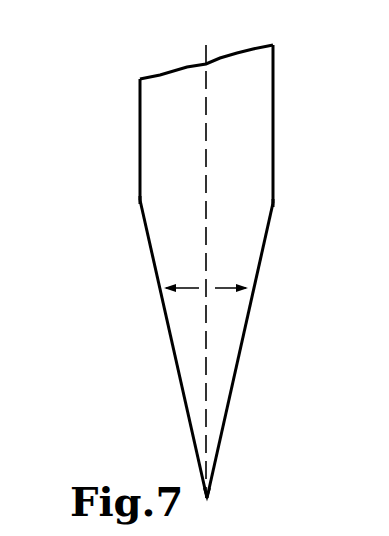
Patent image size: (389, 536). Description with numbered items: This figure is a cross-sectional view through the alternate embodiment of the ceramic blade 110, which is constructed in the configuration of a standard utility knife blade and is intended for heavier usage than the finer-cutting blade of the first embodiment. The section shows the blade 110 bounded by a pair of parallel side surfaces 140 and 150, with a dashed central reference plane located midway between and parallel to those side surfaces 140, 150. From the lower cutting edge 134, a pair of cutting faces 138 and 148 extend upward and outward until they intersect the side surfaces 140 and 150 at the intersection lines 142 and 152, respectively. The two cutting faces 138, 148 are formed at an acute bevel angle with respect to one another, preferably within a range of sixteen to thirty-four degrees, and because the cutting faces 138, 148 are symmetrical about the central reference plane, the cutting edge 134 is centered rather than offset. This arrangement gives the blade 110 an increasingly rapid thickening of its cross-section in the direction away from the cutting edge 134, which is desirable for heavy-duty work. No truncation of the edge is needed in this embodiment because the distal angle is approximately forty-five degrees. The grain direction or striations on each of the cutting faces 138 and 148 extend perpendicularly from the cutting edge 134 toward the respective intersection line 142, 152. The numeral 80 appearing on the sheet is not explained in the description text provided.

The sensor assembly 80 is at (368, 262).
The ceramic blade 110 is at (213, 273).
The side edge 134 is at (207, 498).
The cutting face 138 is at (166, 325).
The side surface 140 is at (140, 104).
The intersection line 142 is at (140, 205).
The cutting face 148 is at (249, 320).
The side surface 150 is at (273, 96).
The intersection line 152 is at (273, 203).